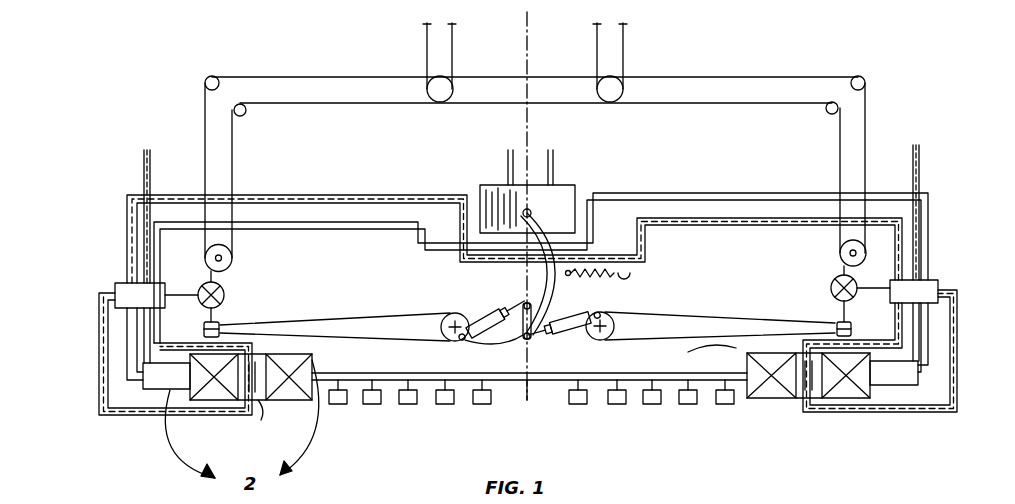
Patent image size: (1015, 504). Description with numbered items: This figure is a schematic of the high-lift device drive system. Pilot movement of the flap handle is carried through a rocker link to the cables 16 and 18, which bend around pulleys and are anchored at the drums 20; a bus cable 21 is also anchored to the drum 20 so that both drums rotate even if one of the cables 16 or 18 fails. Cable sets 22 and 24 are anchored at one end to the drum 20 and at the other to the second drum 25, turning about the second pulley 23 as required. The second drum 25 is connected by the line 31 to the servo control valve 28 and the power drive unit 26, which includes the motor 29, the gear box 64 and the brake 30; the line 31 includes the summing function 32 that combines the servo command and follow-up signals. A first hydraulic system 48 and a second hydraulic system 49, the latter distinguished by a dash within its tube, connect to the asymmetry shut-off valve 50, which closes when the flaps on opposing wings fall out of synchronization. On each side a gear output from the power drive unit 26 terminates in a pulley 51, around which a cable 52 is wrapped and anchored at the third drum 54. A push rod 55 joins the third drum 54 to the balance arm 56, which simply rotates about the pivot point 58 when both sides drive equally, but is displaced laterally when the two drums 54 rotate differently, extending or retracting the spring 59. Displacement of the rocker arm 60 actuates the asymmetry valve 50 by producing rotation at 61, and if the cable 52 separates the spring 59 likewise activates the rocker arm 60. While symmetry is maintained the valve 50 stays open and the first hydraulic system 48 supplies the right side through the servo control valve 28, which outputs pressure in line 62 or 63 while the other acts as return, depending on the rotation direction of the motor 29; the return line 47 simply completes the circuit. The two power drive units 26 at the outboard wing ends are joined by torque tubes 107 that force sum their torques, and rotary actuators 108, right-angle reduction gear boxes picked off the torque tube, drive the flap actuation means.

The cable 16 is at (425, 44).
The cable 18 is at (626, 45).
The drum 20 is at (454, 90).
The bus cable 21 is at (513, 76).
The cable set 22 is at (202, 135).
The second pulley 23 is at (207, 80).
The cable set 24 is at (720, 74).
The second drum 25 is at (235, 258).
The power drive unit 26 is at (301, 402).
The servo control valve 28 is at (120, 283).
The motor 29 is at (530, 375).
The brake 30 is at (497, 386).
The line 31 is at (207, 276).
The summing function 32 is at (226, 289).
The return line 47 is at (142, 168).
The first hydraulic system 48 is at (553, 164).
The second hydraulic system 49 is at (418, 195).
The asymmetry shut-off valve 50 is at (576, 185).
The pulley 51 is at (222, 325).
The cable 52 is at (372, 312).
The third drum 54 is at (454, 310).
The push rod 55 is at (474, 306).
The balance arm 56 is at (526, 348).
The pivot point 58 is at (490, 345).
The spring 59 is at (628, 276).
The rocker arm 60 is at (570, 275).
The rotation point 61 is at (533, 215).
The line 62 is at (122, 362).
The line 63 is at (120, 335).
The gear box 64 is at (216, 401).
The torque tube 107 is at (518, 392).
The rotary actuator 108 is at (340, 404).